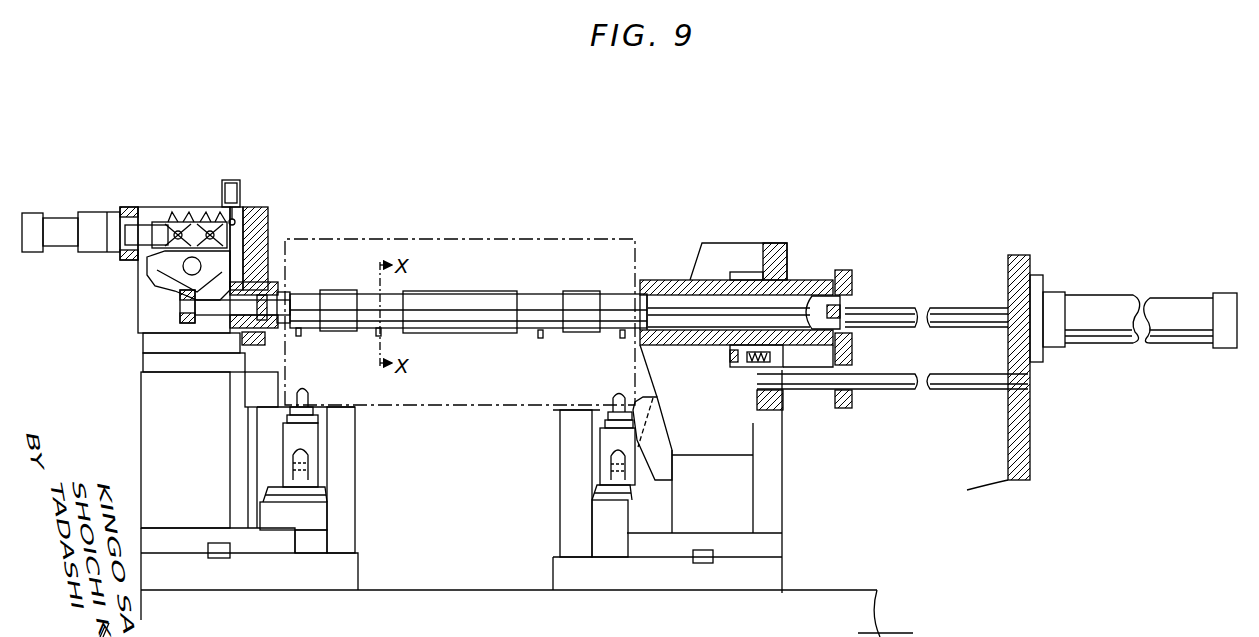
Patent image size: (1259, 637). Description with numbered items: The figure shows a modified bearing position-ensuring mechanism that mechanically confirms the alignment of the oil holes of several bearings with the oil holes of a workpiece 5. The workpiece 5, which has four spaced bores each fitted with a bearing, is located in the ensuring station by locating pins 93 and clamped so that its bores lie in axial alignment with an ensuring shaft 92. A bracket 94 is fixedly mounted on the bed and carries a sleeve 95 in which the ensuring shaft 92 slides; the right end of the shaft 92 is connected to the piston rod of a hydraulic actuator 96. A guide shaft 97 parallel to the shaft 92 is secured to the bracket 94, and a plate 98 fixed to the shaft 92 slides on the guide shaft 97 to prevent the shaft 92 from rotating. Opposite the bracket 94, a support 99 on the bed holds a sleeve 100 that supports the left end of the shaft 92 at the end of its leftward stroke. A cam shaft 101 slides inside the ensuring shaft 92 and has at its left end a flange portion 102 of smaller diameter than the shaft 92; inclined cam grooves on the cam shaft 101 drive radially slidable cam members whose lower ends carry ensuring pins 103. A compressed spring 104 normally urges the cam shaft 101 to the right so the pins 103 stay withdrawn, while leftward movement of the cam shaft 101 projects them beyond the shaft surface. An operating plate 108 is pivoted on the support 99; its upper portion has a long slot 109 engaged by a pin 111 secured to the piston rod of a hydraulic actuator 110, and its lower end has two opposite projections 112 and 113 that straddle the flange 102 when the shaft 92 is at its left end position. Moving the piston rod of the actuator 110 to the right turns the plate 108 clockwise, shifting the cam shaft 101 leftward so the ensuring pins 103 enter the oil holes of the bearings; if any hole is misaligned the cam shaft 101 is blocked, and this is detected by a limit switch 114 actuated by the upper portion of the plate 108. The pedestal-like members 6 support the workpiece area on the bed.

The workpiece 5 is at (450, 255).
The pedestal 6 is at (348, 473).
The ensuring shaft 92 is at (485, 295).
The locating pins 93 is at (310, 395).
The bracket 94 is at (782, 243).
The sleeve 95 is at (813, 290).
The hydraulic actuator 96 is at (1183, 306).
The guide shaft 97 is at (881, 392).
The plate 98 is at (853, 272).
The support 99 is at (155, 392).
The sleeve 100 is at (270, 282).
The cam shaft 101 is at (227, 314).
The flange portion 102 is at (205, 316).
The ensuring pin 103 is at (299, 336).
The compressed spring 104 is at (252, 278).
The operating plate 108 is at (167, 257).
The long slot 109 is at (220, 222).
The hydraulic actuator 110 is at (93, 222).
The pin 111 is at (205, 235).
The projection 112 is at (182, 305).
The projection 113 is at (155, 280).
The limit switch 114 is at (236, 194).